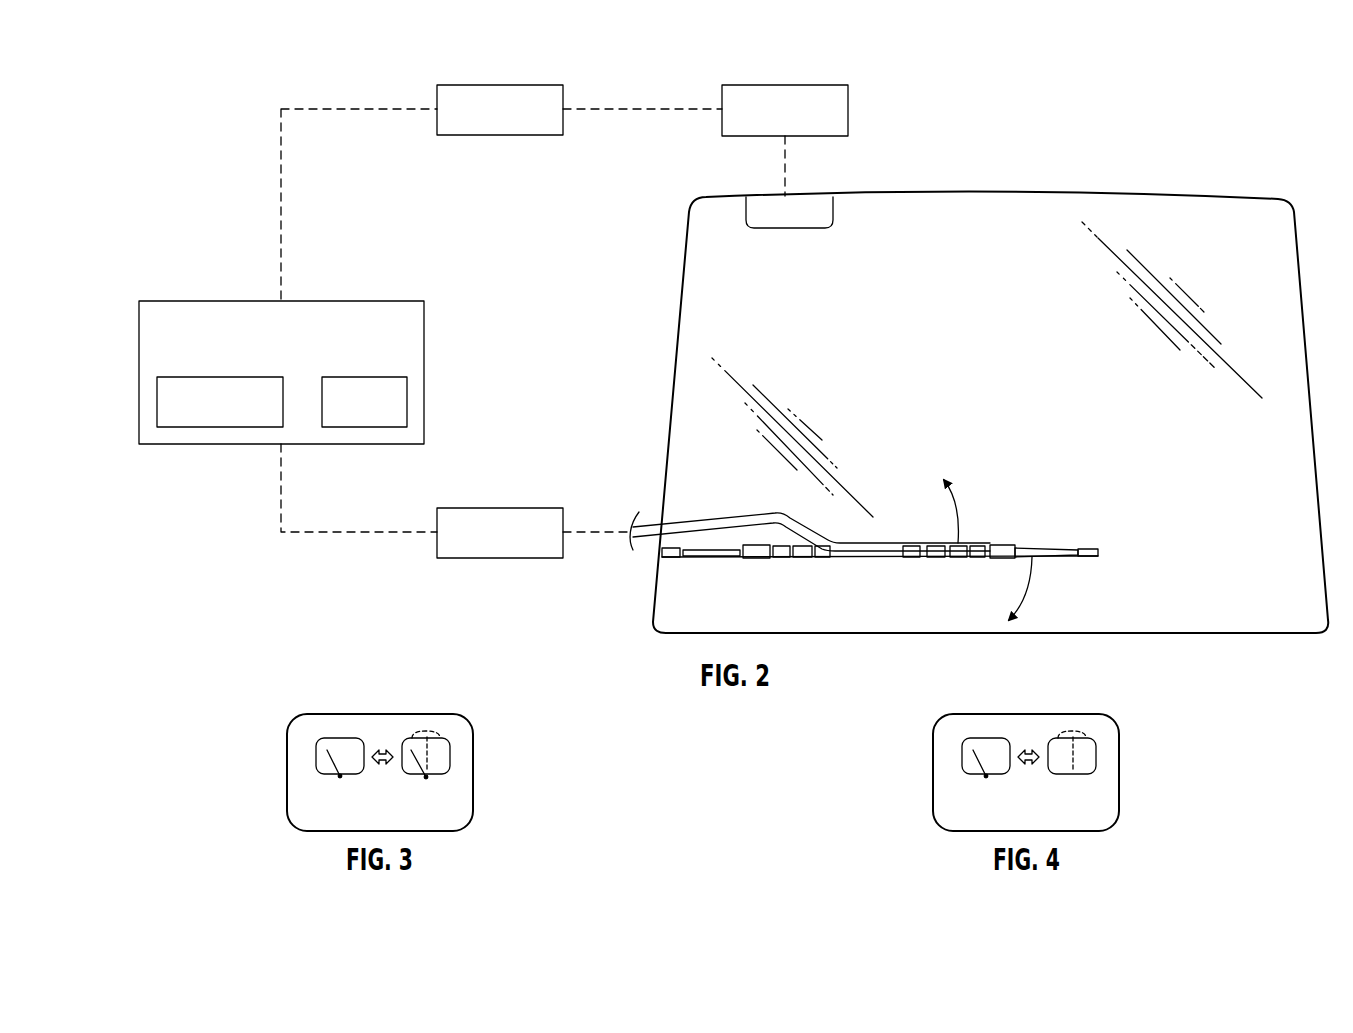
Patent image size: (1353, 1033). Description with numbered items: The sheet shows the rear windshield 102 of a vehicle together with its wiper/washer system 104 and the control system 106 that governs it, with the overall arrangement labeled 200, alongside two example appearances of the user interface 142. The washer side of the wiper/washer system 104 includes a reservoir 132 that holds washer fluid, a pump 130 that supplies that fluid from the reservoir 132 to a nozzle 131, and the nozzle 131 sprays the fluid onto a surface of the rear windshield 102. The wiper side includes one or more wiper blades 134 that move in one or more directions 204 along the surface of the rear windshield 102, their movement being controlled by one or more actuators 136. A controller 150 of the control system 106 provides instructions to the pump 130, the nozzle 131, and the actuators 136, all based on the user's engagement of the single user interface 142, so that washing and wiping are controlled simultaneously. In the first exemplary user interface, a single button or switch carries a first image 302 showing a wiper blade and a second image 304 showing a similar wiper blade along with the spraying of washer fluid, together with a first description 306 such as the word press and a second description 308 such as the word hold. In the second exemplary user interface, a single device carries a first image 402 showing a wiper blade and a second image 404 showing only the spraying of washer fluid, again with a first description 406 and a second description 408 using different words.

In FIG. 2, the vehicle wiper system 200 is at (184, 68).
In FIG. 2, the rear windshield 102 is at (1233, 210).
In FIG. 2, the wiper/washer system 104 is at (432, 221).
In FIG. 2, the control system 106 is at (181, 301).
In FIG. 2, the pump 130 is at (478, 85).
In FIG. 2, the nozzle 131 is at (833, 202).
In FIG. 2, the reservoir 132 is at (767, 85).
In FIG. 2, the wiper blade 134 is at (923, 557).
In FIG. 2, the actuator 136 is at (478, 508).
In FIG. 2, the user interface 142 is at (365, 377).
In FIG. 2, the controller 150 is at (203, 377).
In FIG. 2, the direction 204 is at (960, 512).
In FIG. 3, the first image 302 is at (310, 757).
In FIG. 3, the second image 304 is at (453, 757).
In FIG. 3, the first description 306 is at (308, 800).
In FIG. 3, the second description 308 is at (452, 803).
In FIG. 4, the first image 402 is at (956, 757).
In FIG. 4, the second image 404 is at (1099, 757).
In FIG. 4, the first description 406 is at (954, 800).
In FIG. 4, the second description 408 is at (1098, 803).